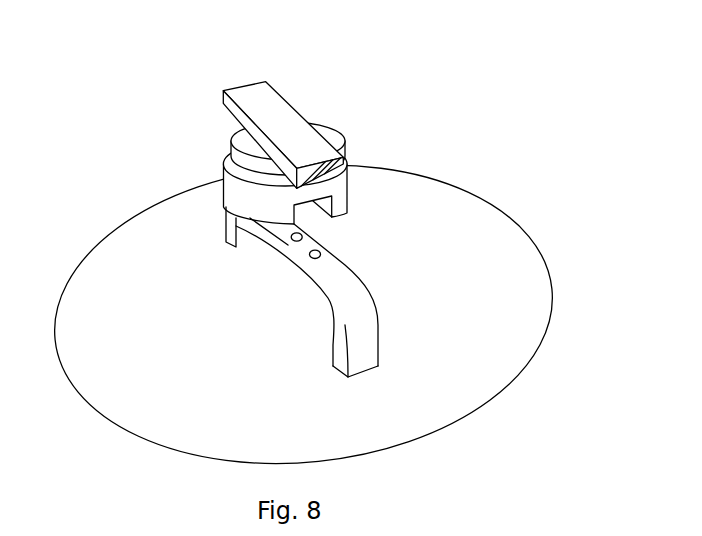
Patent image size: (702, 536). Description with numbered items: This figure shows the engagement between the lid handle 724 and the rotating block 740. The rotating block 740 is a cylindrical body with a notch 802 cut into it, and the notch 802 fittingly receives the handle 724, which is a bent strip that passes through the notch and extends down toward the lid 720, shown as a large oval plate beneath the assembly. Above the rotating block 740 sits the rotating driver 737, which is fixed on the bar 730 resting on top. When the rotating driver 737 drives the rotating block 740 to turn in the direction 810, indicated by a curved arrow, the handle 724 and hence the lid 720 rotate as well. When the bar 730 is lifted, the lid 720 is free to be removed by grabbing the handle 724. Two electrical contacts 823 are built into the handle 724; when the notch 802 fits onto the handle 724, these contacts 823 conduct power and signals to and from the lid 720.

The lid 720 is at (303, 314).
The handle 724 is at (346, 279).
The bar 730 is at (259, 100).
The rotating driver 737 is at (246, 144).
The rotating block 740 is at (233, 197).
The notch 802 is at (317, 213).
The direction 810 is at (355, 208).
The electrical contacts 823 is at (292, 243).